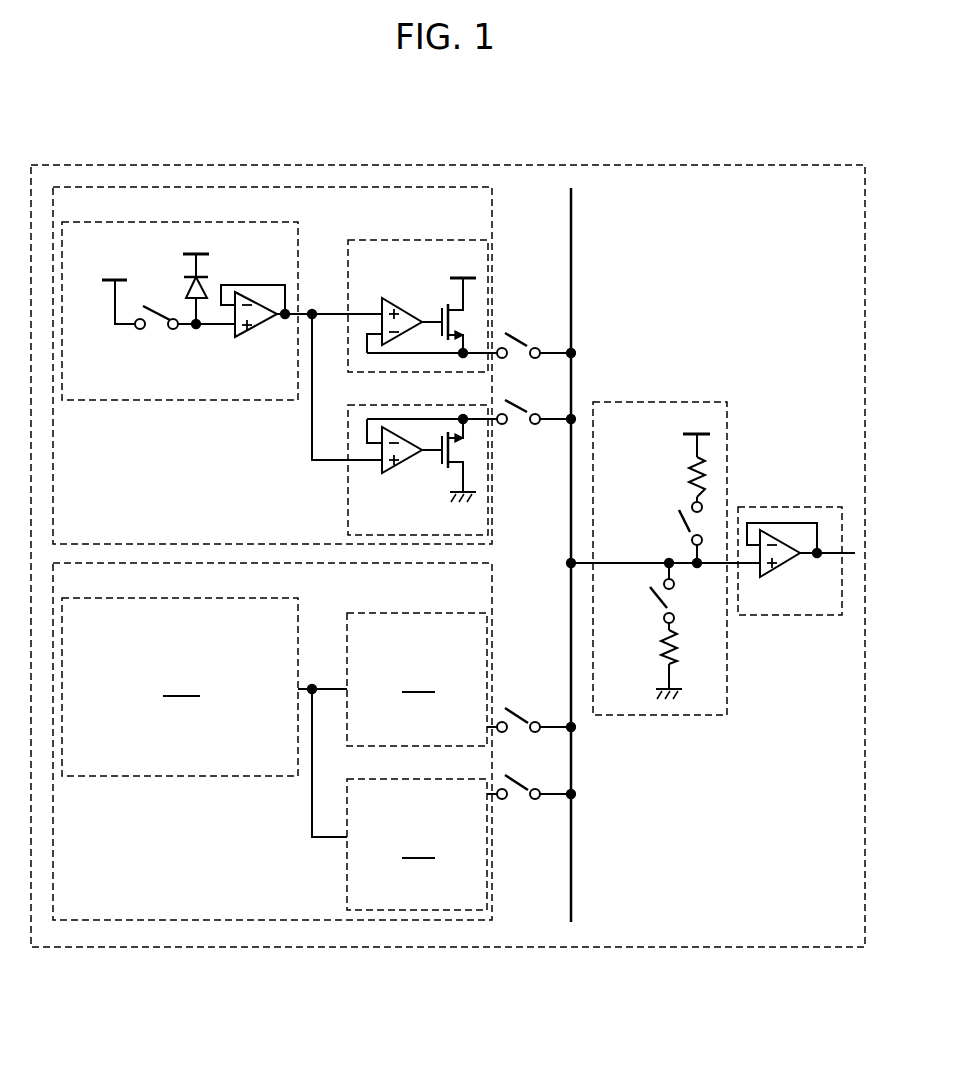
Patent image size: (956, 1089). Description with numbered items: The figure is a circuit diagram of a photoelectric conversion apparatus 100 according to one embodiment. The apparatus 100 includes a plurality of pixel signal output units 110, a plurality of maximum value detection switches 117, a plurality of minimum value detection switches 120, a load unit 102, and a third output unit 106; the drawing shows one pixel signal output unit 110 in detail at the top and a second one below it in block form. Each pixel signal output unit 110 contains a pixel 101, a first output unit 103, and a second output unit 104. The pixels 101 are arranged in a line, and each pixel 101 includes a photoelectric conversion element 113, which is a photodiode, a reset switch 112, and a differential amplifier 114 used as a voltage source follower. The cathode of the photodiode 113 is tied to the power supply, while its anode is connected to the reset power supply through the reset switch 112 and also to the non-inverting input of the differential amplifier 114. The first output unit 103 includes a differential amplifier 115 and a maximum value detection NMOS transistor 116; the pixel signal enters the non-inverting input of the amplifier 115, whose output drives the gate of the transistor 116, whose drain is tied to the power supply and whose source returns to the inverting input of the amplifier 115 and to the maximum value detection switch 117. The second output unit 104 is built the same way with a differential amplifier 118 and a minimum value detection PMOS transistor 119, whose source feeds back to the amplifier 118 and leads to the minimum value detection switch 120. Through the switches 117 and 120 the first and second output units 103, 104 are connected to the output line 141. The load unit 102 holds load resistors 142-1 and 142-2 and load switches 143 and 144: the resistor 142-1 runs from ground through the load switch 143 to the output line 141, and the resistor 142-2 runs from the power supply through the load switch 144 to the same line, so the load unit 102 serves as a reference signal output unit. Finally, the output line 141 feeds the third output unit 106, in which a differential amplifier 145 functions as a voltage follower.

The photoelectric conversion apparatus 100 is at (663, 165).
The pixel 101 is at (230, 222).
The load unit 102 is at (650, 402).
The first output unit 103 is at (397, 237).
The second output unit 104 is at (397, 405).
The third output unit 106 is at (787, 507).
The pixel signal output unit 110 is at (492, 205).
The reset switch 112 is at (156, 330).
The photoelectric conversion element 113 is at (185, 297).
The differential amplifier 114 is at (260, 328).
The differential amplifier 115 is at (395, 297).
The maximum value detection NMOS transistor 116 is at (440, 312).
The maximum value detection switch 117 is at (520, 333).
The differential amplifier 118 is at (400, 465).
The minimum value detection PMOS transistor 119 is at (438, 460).
The minimum value detection switch 120 is at (513, 430).
The output line 141 is at (571, 268).
The load resistor 142-1 is at (658, 658).
The load resistor 142-2 is at (690, 470).
The load switch 143 is at (658, 600).
The load switch 144 is at (680, 525).
The differential amplifier 145 is at (790, 563).